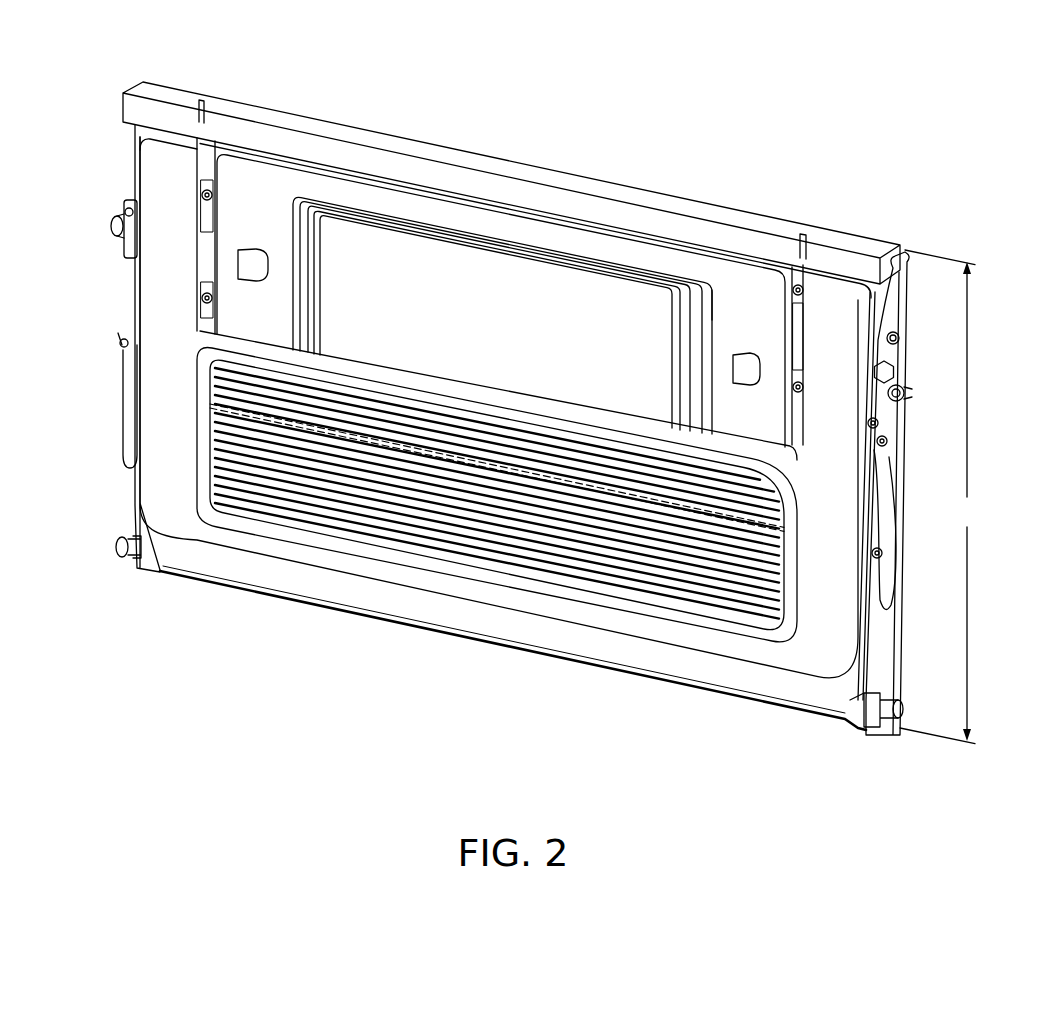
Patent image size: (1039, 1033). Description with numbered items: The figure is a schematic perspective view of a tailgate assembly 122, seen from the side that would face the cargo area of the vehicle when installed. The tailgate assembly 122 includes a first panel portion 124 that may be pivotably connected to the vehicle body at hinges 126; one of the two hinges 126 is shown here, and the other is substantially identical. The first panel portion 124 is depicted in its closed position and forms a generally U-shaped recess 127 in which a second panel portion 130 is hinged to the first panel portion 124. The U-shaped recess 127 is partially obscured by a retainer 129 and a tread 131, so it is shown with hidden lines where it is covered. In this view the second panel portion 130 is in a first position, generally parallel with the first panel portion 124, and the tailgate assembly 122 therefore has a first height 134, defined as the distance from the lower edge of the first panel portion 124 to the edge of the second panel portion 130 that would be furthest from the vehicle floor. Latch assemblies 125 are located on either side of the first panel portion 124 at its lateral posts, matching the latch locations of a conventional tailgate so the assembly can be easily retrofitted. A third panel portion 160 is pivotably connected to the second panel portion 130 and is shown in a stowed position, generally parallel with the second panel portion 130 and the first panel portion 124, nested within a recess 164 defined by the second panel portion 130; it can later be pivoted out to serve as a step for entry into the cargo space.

The tailgate assembly 122 is at (694, 109).
The first panel portion 124 is at (810, 653).
The latch assemblies 125 is at (912, 372).
The hinges 126 is at (126, 556).
The U-shaped recess 127 is at (203, 260).
The retainer 129 is at (200, 350).
The second panel portion 130 is at (742, 303).
The tread 131 is at (708, 595).
The first height 134 is at (941, 497).
The third panel portion 160 is at (507, 317).
The recess 164 is at (293, 247).